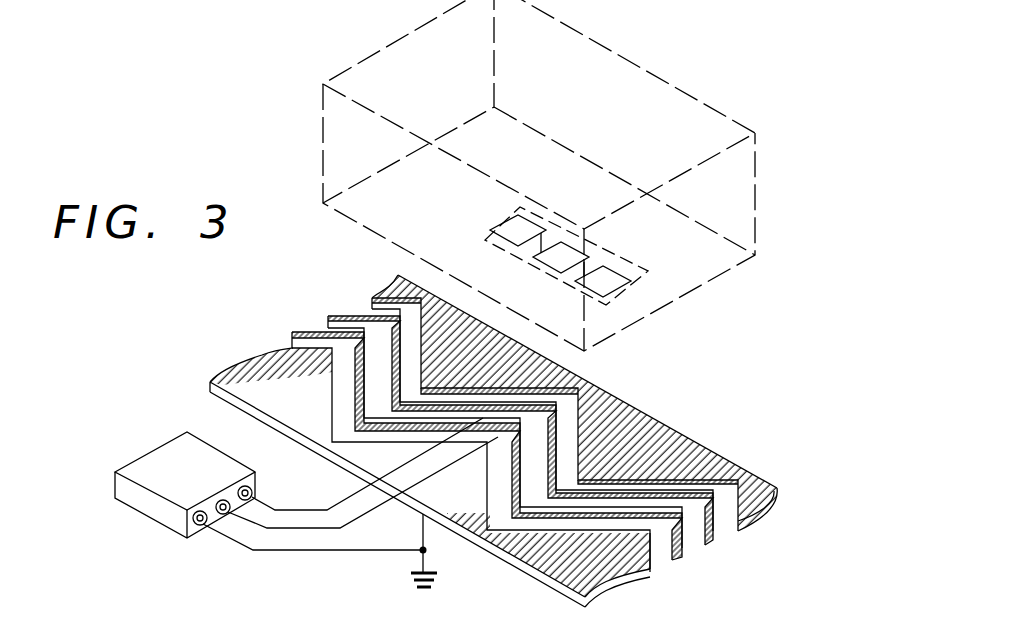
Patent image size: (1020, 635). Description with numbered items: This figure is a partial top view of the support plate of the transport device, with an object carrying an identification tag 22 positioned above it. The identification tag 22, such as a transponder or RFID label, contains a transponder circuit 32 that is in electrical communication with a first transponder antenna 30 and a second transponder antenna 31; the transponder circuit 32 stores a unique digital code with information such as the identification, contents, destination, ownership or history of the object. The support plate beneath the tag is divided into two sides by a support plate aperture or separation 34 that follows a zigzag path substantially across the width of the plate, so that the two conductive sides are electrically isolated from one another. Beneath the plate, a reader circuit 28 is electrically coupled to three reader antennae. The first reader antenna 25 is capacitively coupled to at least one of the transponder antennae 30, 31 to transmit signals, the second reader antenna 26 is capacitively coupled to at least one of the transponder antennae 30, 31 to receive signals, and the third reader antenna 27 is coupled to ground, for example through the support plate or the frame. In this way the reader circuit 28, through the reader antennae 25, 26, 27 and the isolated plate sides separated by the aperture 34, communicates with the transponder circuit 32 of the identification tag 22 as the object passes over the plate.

The identification tag 22 is at (545, 243).
The first transponder antenna 30 is at (495, 232).
The second transponder antenna 31 is at (613, 276).
The transponder circuit 32 is at (545, 258).
The first reader antenna 25 is at (550, 440).
The second reader antenna 26 is at (365, 394).
The support plate aperture/separation 34 is at (567, 460).
The reader circuit 28 is at (158, 457).
The third reader antenna 27 is at (428, 550).